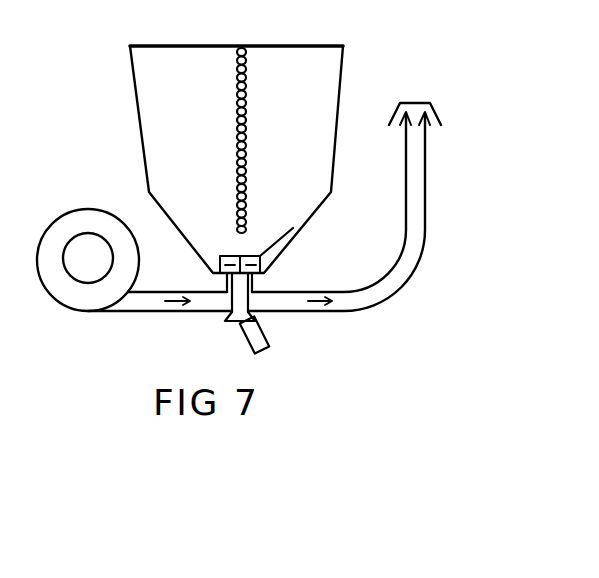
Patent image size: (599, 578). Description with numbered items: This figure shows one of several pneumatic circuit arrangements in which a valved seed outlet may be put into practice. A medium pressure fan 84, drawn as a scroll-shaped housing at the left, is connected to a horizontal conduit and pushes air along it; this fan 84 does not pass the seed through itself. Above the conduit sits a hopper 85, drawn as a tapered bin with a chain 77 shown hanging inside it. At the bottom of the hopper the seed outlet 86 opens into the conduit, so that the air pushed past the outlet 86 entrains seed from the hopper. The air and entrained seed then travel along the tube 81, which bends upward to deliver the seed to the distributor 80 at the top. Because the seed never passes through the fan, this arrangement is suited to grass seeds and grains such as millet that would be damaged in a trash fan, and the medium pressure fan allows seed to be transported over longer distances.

The chain 77 is at (247, 146).
The distributor 80 is at (431, 108).
The tube 81 is at (397, 280).
The medium pressure fan 84 is at (91, 297).
The hopper 85 is at (333, 150).
The outlet 86 is at (265, 313).